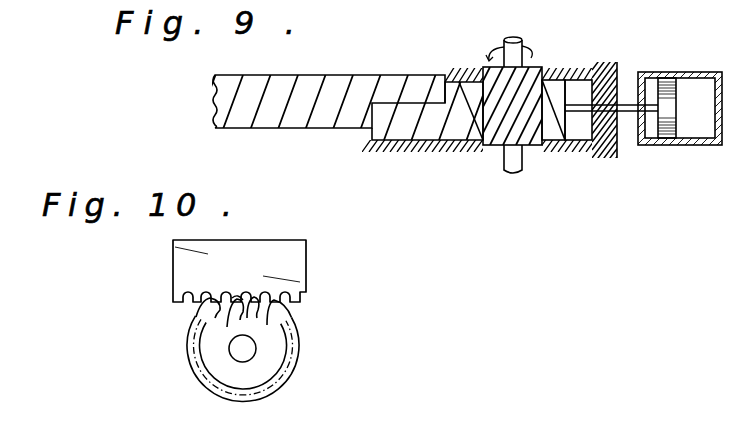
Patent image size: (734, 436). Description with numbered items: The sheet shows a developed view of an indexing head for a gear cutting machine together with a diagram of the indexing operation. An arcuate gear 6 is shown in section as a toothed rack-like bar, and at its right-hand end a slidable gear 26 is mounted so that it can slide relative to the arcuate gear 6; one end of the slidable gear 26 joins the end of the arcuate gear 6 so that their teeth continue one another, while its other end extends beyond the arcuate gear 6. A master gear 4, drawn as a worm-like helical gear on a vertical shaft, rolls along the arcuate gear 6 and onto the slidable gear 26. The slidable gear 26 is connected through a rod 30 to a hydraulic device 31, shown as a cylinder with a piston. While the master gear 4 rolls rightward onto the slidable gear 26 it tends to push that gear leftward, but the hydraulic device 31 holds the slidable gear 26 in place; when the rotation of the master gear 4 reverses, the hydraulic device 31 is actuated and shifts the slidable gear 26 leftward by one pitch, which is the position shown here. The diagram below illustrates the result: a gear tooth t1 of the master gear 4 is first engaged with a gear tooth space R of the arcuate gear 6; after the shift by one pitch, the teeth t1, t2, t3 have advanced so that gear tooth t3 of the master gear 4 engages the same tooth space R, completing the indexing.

In FIG. 9, the arcuate gear 6 is at (333, 83).
In FIG. 10, the arcuate gear 6 is at (291, 253).
In FIG. 9, the master gear 4 is at (490, 70).
In FIG. 10, the master gear 4 is at (206, 348).
In FIG. 9, the slidable gear 26 is at (557, 92).
In FIG. 9, the rod 30 is at (628, 105).
In FIG. 9, the hydraulic device 31 is at (708, 72).
In FIG. 10, the gear tooth space R is at (238, 298).
In FIG. 10, the gear tooth t1 is at (224, 328).
In FIG. 10, the gear tooth t2 is at (250, 326).
In FIG. 10, the gear tooth t3 is at (270, 351).